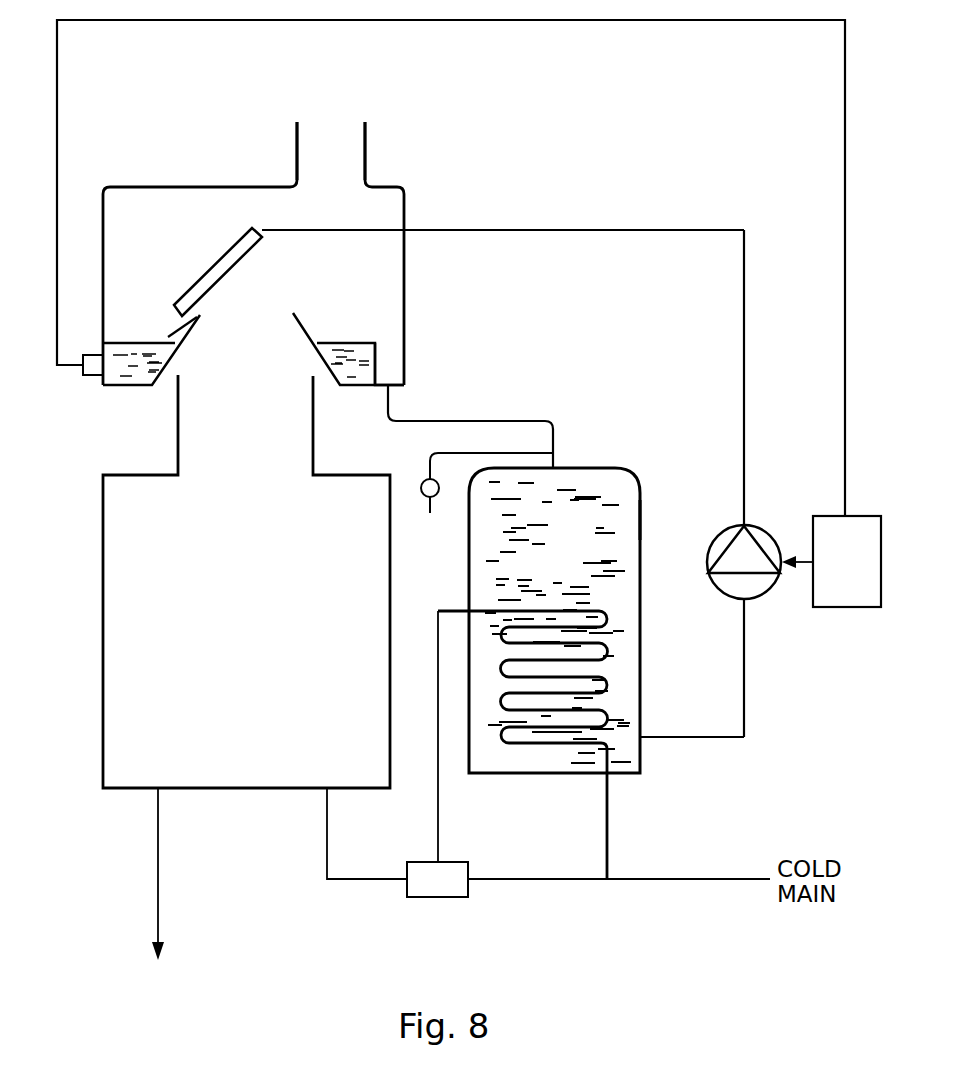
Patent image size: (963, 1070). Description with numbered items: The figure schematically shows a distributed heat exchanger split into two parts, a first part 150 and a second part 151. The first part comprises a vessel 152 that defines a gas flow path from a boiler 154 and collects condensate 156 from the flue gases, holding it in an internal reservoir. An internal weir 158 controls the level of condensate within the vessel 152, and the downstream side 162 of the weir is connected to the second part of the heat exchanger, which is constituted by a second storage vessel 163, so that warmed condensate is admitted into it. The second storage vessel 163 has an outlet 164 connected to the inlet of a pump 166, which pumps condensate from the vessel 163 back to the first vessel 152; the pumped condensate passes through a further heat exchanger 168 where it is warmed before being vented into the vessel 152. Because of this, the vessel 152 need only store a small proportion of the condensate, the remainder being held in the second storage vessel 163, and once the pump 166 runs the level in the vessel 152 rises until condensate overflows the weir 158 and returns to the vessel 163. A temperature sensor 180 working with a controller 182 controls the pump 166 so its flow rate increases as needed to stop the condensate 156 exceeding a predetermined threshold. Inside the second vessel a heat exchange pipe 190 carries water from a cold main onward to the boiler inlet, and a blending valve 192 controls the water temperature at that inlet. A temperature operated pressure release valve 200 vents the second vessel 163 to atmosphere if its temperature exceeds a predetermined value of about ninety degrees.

The first part of the heat exchanger 150 is at (404, 265).
The second part of the heat exchanger 151 is at (585, 468).
The vessel 152 is at (404, 210).
The boiler 154 is at (103, 680).
The condensate 156 is at (128, 388).
The internal weir 158 is at (375, 365).
The downstream side of the weir 162 is at (392, 370).
The second storage vessel 163 is at (640, 518).
The outlet 164 is at (640, 750).
The pump 166 is at (708, 575).
The further heat exchanger 168 is at (228, 280).
The temperature sensor 180 is at (85, 375).
The controller 182 is at (846, 607).
The heat exchange pipe 190 is at (543, 745).
The blending valve 192 is at (437, 897).
The temperature operated pressure release valve 200 is at (423, 480).